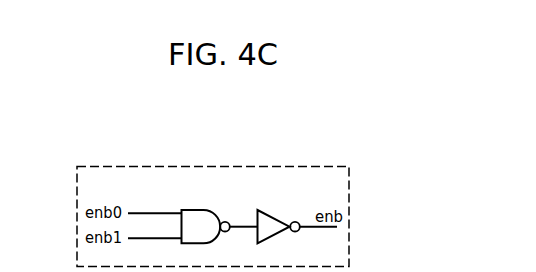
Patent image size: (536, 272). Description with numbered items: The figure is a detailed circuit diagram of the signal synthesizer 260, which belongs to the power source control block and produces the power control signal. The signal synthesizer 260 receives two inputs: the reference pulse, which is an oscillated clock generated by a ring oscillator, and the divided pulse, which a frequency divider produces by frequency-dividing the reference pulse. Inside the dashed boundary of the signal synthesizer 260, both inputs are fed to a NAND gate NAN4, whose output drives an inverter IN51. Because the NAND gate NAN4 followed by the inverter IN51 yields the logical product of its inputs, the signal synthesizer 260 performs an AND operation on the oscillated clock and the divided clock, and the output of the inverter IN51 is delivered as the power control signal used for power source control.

The signal synthesizer 260 is at (283, 167).
The NAND gate NAN4 is at (206, 215).
The inverter IN51 is at (279, 215).